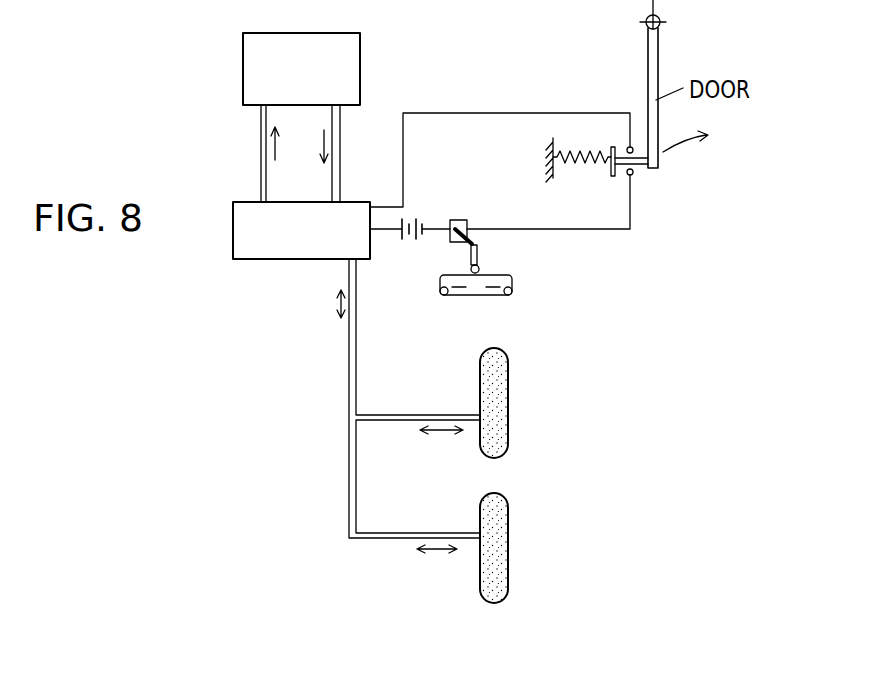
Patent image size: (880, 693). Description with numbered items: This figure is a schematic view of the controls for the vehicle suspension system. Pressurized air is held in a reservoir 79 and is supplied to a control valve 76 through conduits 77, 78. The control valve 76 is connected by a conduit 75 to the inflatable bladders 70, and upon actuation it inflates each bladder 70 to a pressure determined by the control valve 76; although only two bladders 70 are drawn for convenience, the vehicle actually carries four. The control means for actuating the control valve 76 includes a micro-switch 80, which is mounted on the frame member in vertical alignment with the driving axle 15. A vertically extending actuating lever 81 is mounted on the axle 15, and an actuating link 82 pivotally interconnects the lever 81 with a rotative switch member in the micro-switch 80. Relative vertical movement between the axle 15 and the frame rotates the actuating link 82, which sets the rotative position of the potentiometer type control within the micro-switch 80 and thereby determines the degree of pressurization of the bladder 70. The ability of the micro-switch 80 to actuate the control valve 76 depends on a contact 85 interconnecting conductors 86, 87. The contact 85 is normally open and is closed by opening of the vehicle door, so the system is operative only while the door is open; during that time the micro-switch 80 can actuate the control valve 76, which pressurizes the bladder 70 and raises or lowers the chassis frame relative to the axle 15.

The reservoir 79 is at (248, 67).
The conduit 77 is at (261, 165).
The conduit 78 is at (341, 166).
The control valve 76 is at (250, 251).
The conduit 75 is at (350, 352).
The inflatable bladder 70 is at (498, 423).
The micro-switch 80 is at (458, 220).
The actuating lever 81 is at (480, 258).
The actuating link 82 is at (465, 243).
The driving axle 15 is at (495, 292).
The conductor 86 is at (517, 113).
The conductor 87 is at (595, 231).
The contact 85 is at (611, 174).